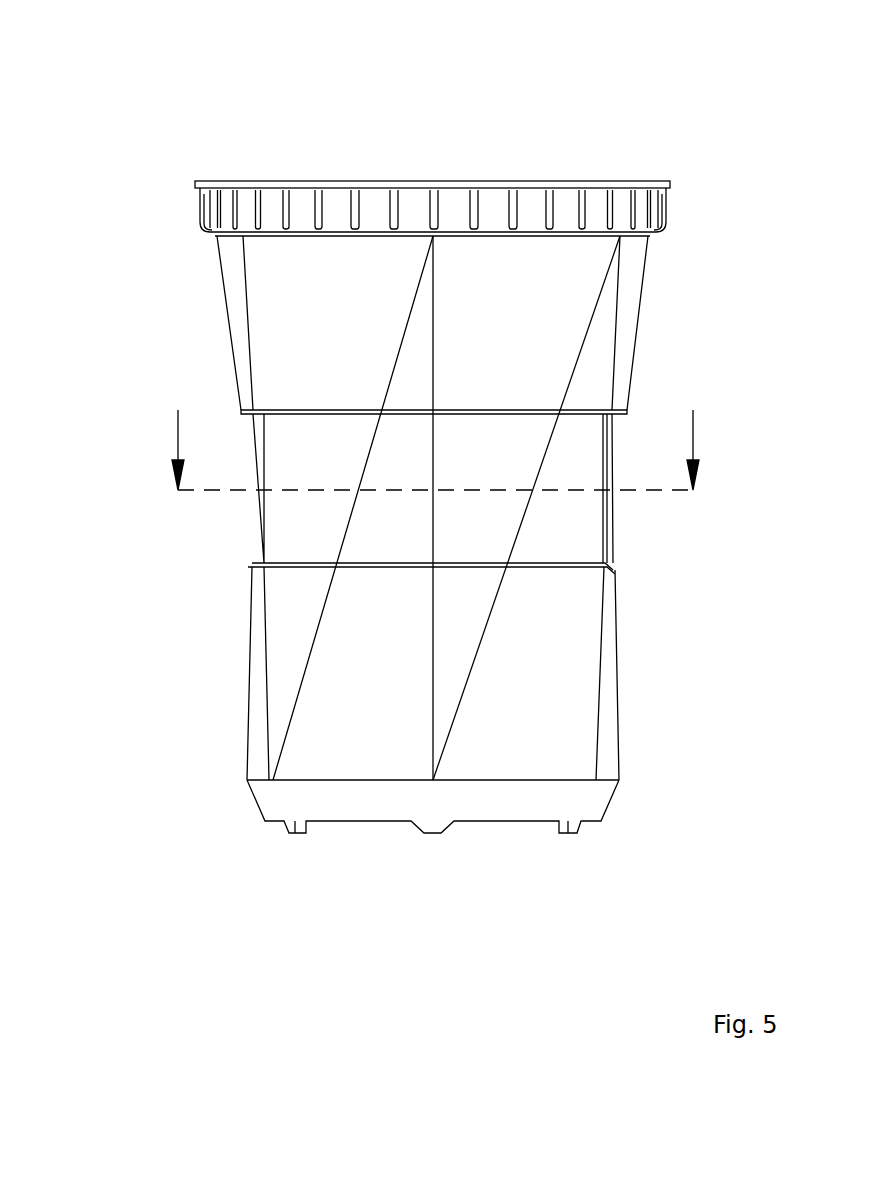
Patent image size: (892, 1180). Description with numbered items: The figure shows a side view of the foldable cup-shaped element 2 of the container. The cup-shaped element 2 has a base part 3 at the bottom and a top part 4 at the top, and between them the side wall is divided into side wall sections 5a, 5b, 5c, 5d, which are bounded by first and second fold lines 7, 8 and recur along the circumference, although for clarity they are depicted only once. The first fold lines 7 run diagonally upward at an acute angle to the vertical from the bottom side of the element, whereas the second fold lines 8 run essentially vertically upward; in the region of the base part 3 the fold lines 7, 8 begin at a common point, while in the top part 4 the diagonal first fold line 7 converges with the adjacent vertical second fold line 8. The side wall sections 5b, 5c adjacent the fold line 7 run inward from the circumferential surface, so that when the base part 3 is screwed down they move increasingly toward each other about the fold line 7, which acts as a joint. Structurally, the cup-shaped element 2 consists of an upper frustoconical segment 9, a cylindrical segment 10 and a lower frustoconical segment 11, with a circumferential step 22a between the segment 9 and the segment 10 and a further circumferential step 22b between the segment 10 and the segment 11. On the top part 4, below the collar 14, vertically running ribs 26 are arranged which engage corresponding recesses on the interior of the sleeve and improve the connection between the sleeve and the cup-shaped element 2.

The cup-shaped element 2 is at (380, 124).
The base part 3 is at (392, 802).
The top part 4 is at (570, 186).
The side wall section 5a is at (353, 508).
The side wall section 5b is at (445, 675).
The side wall section 5c is at (523, 675).
The side wall section 5d is at (607, 754).
The first fold line 7 is at (520, 530).
The second fold line 8 is at (433, 505).
The upper frustoconical segment 9 is at (638, 321).
The cylindrical segment 10 is at (607, 457).
The lower frustoconical segment 11 is at (607, 675).
The collar 14 is at (198, 186).
The circumferential step 22a is at (247, 415).
The circumferential step 22b is at (254, 562).
The ribs 26 is at (503, 200).